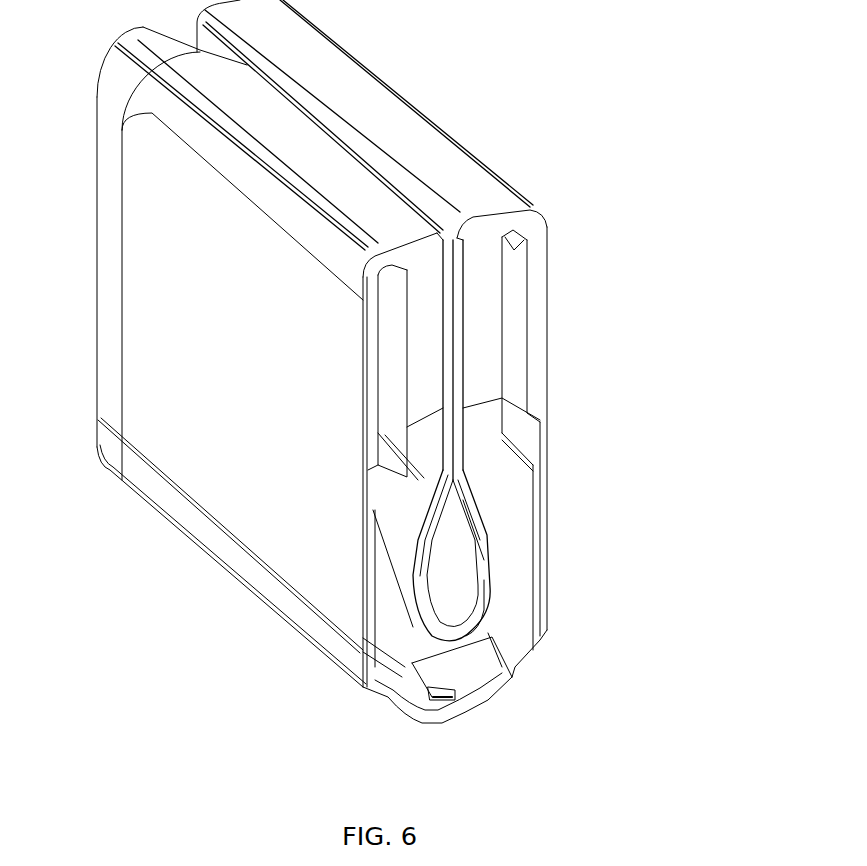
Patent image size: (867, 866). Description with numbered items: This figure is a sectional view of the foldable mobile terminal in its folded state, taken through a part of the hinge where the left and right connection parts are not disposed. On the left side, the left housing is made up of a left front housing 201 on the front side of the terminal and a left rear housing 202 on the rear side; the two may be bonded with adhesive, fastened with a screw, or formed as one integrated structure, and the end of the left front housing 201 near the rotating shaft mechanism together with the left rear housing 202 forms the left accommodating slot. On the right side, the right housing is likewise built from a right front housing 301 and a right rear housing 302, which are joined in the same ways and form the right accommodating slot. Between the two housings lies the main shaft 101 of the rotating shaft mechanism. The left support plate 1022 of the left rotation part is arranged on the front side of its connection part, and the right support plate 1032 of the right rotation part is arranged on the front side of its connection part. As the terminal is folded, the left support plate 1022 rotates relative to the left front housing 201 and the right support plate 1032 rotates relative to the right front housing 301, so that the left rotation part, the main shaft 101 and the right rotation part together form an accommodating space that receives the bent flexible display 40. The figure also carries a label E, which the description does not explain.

The left front housing 201 is at (243, 115).
The left rear housing 202 is at (223, 333).
The right front housing 301 is at (483, 317).
The right rear housing 302 is at (530, 380).
The right support plate 1032 is at (490, 535).
The left support plate 1022 is at (413, 570).
The flexible display 40 is at (487, 610).
The main shaft 101 is at (452, 673).
The viewing direction E is at (590, 512).